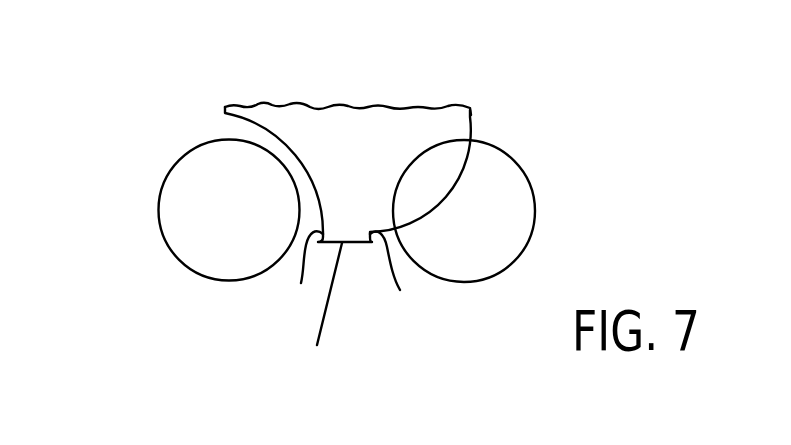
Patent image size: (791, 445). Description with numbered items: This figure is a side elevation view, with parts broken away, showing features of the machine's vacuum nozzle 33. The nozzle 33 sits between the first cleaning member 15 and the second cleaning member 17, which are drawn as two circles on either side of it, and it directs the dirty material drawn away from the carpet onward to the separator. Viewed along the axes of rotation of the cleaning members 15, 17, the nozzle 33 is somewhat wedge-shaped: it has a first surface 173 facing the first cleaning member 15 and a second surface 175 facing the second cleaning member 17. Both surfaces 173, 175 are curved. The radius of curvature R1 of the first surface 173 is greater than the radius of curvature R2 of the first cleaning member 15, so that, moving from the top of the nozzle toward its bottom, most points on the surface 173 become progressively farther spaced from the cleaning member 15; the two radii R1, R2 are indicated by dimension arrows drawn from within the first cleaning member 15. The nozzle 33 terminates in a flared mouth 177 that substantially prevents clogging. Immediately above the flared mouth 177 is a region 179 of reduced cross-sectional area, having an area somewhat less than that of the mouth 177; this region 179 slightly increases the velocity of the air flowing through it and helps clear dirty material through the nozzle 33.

The first cleaning member 15 is at (157, 210).
The second cleaning member 17 is at (523, 168).
The vacuum nozzle 33 is at (365, 290).
The first surface 173 is at (301, 283).
The second surface 175 is at (400, 290).
The flared mouth 177 is at (317, 345).
The region of reduced cross-sectional area 179 is at (347, 203).
The radius of curvature of the first surface R1 is at (290, 152).
The radius of curvature of the first member R2 is at (240, 140).